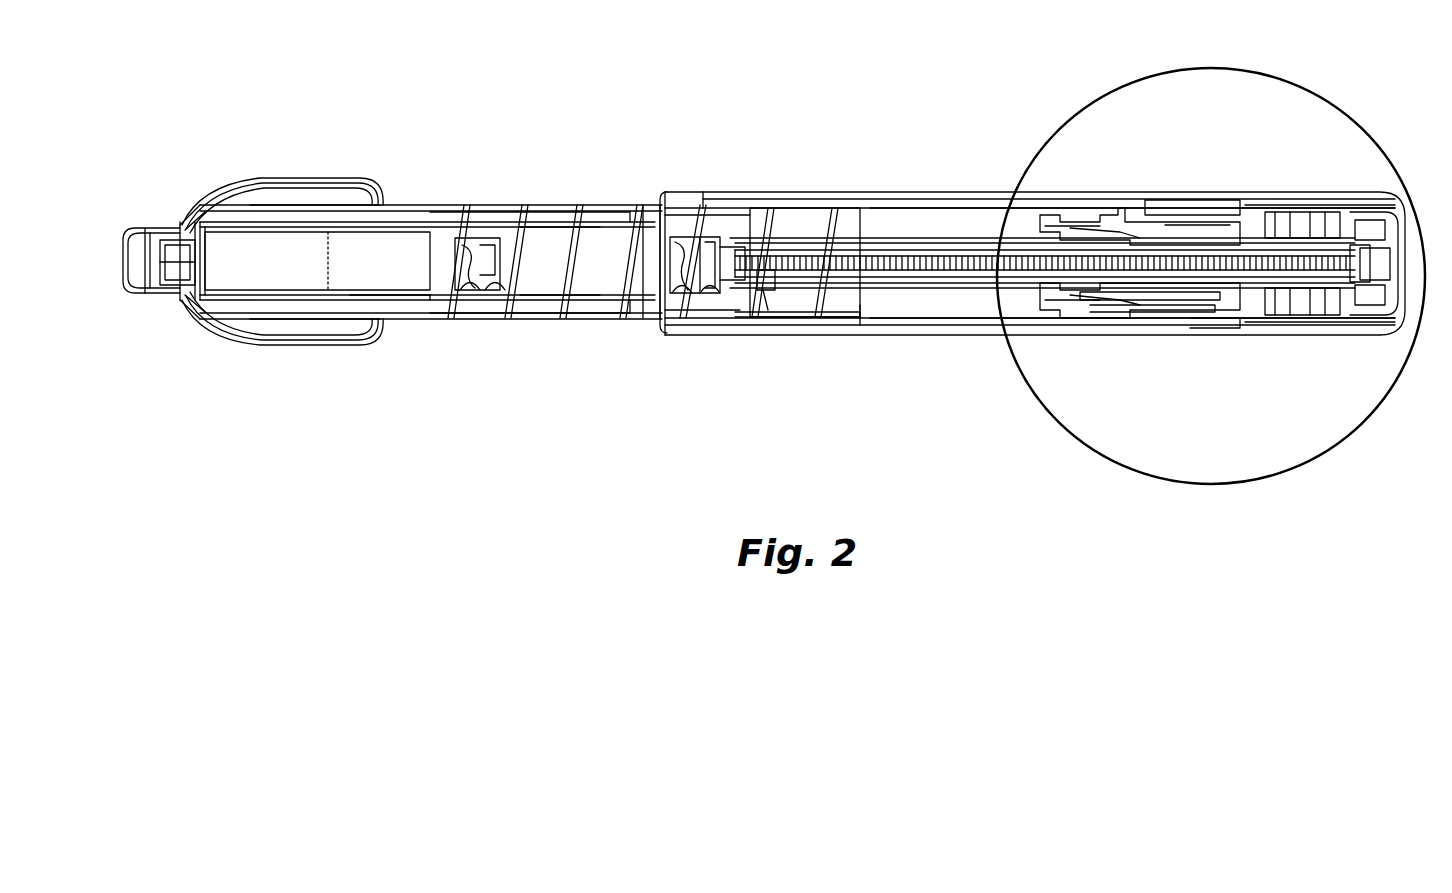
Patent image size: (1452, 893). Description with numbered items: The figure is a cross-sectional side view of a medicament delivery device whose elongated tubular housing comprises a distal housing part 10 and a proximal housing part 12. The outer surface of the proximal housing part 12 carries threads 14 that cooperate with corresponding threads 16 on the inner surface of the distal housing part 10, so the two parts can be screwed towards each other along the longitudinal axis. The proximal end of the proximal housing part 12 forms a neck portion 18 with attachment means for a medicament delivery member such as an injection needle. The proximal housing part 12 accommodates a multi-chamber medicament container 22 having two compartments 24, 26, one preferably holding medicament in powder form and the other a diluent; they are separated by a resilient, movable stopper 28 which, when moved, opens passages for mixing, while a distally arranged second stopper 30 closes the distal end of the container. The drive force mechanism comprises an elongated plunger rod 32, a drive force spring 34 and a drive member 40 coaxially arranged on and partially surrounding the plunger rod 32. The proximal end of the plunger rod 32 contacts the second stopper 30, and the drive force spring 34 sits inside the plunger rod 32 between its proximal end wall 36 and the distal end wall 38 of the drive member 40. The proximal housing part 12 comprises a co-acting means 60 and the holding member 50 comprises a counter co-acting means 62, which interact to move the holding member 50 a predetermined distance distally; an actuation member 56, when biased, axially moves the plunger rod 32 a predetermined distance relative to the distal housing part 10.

The distal housing part 10 is at (925, 200).
The proximal housing part 12 is at (468, 318).
The threads 14 is at (590, 212).
The threads 16 is at (725, 207).
The neck portion 18 is at (148, 247).
The multi-chamber medicament container 22 is at (330, 222).
The compartment 24 is at (317, 266).
The compartment 26 is at (557, 261).
The movable stopper 28 is at (478, 245).
The second stopper 30 is at (682, 248).
The plunger rod 32 is at (943, 283).
The drive force spring 34 is at (846, 250).
The proximal end wall 36 is at (772, 280).
The distal end wall 38 is at (1351, 262).
The drive member 40 is at (1183, 293).
The holding member 50 is at (1125, 226).
The actuation member 56 is at (1396, 300).
The co-acting means 60 is at (861, 283).
The counter co-acting means 62 is at (1117, 313).